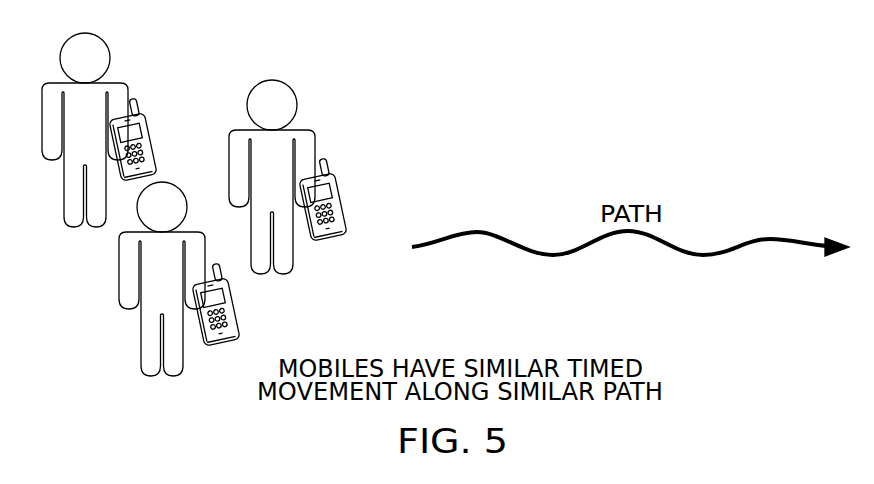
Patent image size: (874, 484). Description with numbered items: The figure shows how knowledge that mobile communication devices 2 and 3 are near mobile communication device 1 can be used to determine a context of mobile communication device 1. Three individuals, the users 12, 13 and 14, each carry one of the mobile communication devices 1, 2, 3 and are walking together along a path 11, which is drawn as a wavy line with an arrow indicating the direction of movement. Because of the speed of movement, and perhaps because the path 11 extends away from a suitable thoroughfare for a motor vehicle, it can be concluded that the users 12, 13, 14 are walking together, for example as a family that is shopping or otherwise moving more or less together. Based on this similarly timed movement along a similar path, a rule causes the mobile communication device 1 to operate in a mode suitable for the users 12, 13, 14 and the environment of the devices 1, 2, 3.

The mobile communication device 1 is at (343, 205).
The mobile communication device 2 is at (238, 310).
The mobile communication device 3 is at (154, 150).
The path 11 is at (477, 229).
The user 12 is at (264, 178).
The user 13 is at (154, 275).
The user 14 is at (77, 138).